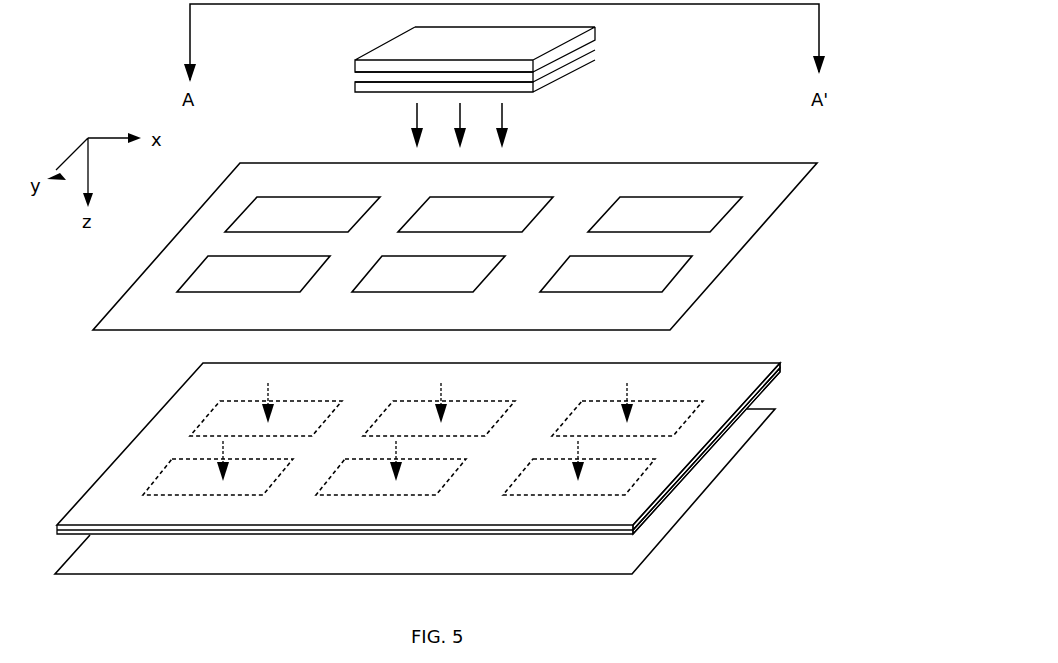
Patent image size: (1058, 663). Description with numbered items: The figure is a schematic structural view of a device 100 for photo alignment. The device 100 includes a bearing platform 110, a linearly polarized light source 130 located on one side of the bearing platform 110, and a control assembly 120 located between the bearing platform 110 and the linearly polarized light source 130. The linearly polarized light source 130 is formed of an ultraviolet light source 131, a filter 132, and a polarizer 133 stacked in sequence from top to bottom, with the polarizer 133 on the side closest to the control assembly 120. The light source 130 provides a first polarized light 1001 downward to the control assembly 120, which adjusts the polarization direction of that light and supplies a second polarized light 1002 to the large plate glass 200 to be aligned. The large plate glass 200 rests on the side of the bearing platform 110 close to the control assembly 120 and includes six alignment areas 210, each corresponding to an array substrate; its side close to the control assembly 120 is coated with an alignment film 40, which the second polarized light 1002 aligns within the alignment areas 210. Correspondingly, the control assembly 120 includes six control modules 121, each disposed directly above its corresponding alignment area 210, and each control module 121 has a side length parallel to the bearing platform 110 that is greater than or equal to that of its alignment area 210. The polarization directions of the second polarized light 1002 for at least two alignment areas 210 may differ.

The device for photo alignment 100 is at (863, 187).
The bearing platform 110 is at (672, 513).
The control assembly 120 is at (470, 246).
The control module 121 is at (655, 275).
The linearly polarized light source 130 is at (550, 66).
The ultraviolet light source 131 is at (545, 52).
The filter 132 is at (548, 66).
The polarizer 133 is at (552, 78).
The large plate glass to be aligned 200 is at (454, 448).
The alignment film 40 is at (753, 375).
The alignment area 210 is at (683, 422).
The incident light 1001 is at (502, 112).
The transmitted light 1002 is at (627, 380).